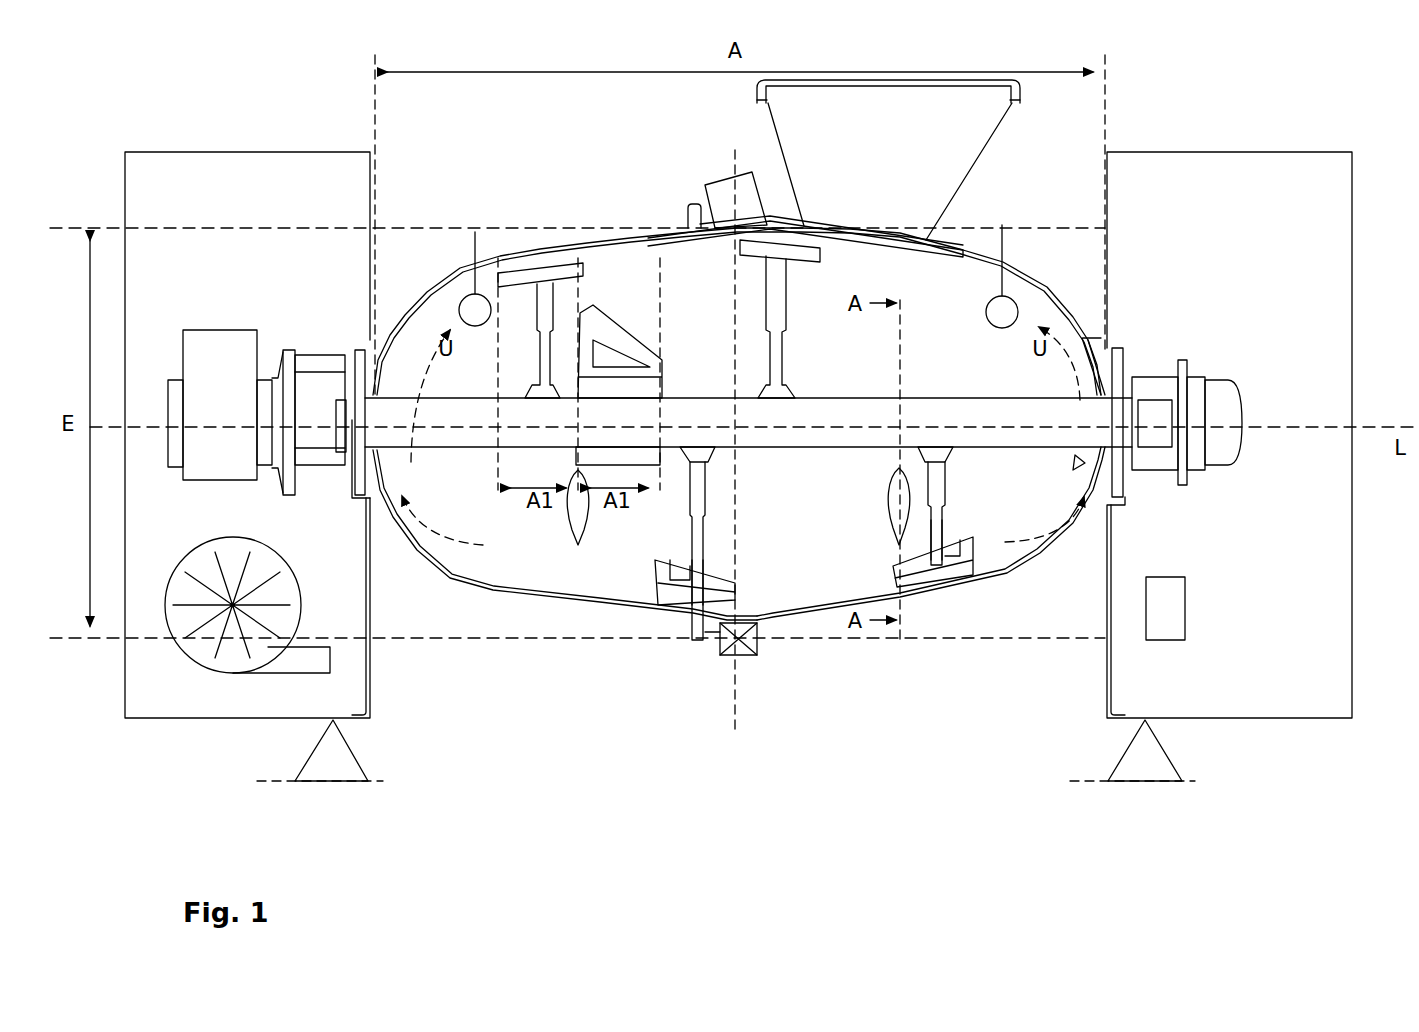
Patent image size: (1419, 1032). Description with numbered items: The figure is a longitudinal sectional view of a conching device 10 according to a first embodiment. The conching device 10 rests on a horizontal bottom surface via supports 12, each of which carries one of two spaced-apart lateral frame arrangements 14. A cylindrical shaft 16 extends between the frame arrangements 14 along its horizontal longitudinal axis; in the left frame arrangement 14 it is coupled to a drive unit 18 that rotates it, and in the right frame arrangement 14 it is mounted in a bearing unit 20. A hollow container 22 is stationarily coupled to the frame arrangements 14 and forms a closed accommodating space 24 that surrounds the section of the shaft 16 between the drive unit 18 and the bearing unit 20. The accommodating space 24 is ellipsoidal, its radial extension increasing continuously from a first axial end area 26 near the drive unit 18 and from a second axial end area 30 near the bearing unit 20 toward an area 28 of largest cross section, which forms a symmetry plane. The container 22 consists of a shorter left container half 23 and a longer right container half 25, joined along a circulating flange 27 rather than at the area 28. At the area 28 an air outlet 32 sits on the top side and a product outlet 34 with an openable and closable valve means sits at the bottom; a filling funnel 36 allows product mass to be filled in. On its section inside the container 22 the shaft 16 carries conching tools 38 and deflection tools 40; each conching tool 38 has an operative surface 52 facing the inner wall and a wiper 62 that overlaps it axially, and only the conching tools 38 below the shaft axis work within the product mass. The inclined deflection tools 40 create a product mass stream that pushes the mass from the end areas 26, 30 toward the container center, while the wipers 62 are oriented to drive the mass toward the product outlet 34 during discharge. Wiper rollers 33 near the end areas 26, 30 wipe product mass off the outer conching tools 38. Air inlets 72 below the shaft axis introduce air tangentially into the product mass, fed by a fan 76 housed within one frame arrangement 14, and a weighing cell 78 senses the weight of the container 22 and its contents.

The conching device 10 is at (1181, 116).
The supports 12 is at (322, 755).
The lateral frame arrangements 14 is at (200, 230).
The cylindrical shaft 16 is at (420, 414).
The drive unit 18 is at (237, 362).
The bearing unit 20 is at (1213, 376).
The container 22 is at (440, 282).
The container half 23 is at (478, 292).
The accommodating space 24 is at (598, 268).
The container half 25 is at (1005, 300).
The first axial end area 26 is at (405, 532).
The flange 27 is at (686, 214).
The area of largest cross section 28 is at (733, 160).
The second axial end area 30 is at (1078, 520).
The air outlet 32 is at (718, 226).
The wiper rollers 33 is at (421, 300).
The product outlet 34 is at (730, 656).
The filling funnel 36 is at (920, 180).
The conching tools 38 is at (556, 303).
The deflection tool 40 is at (1087, 334).
The operative surface 52 is at (670, 602).
The wiper 62 is at (655, 574).
The air inlet 72 is at (580, 548).
The fan 76 is at (205, 676).
The weighing cell 78 is at (1186, 602).